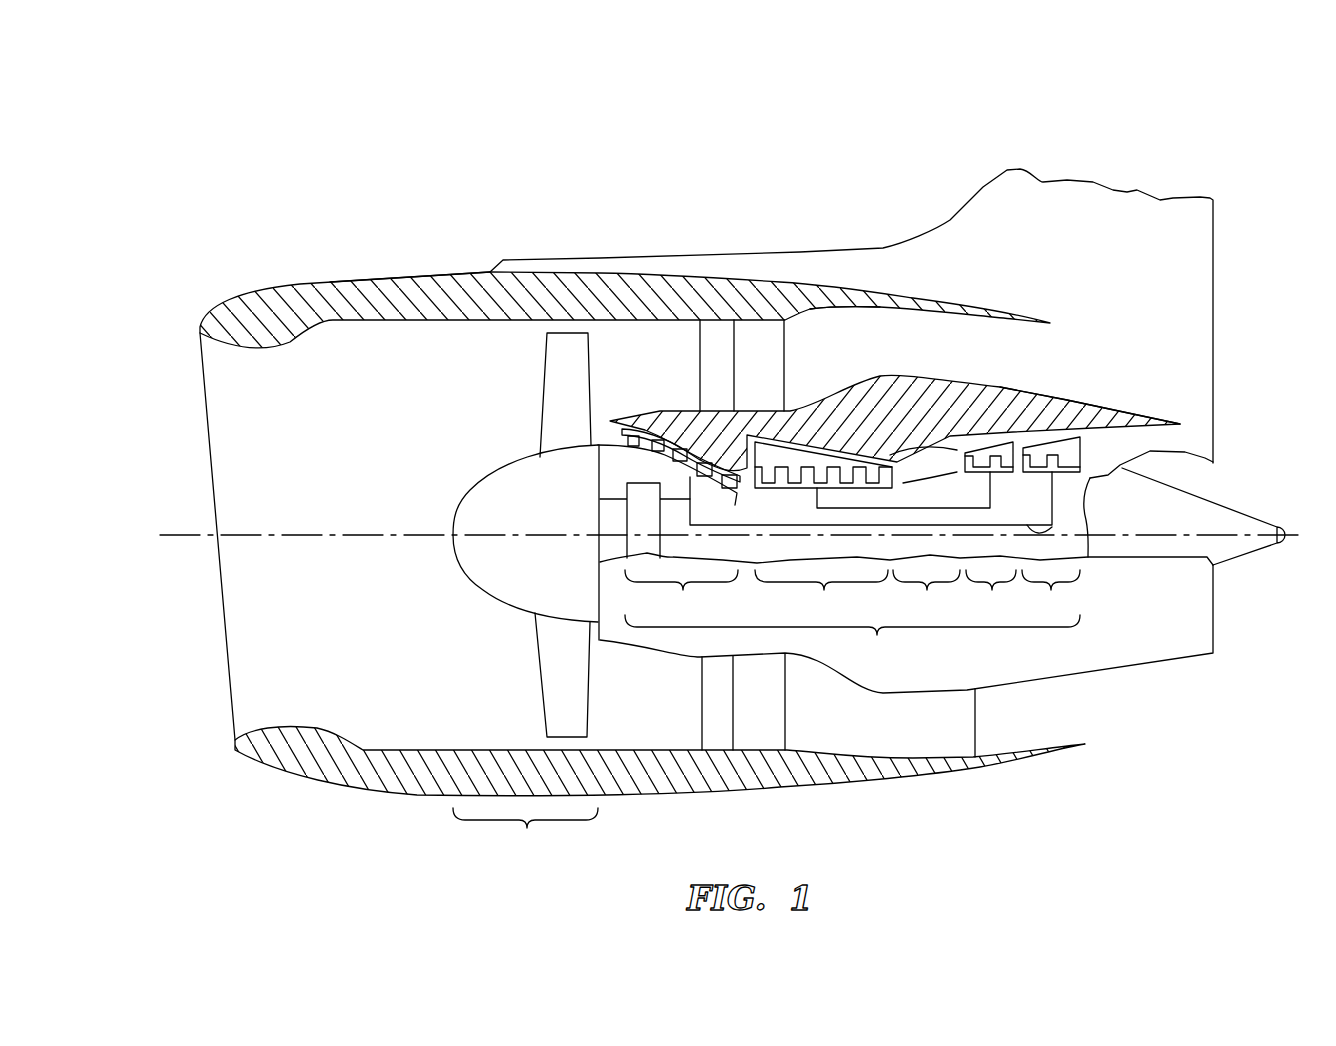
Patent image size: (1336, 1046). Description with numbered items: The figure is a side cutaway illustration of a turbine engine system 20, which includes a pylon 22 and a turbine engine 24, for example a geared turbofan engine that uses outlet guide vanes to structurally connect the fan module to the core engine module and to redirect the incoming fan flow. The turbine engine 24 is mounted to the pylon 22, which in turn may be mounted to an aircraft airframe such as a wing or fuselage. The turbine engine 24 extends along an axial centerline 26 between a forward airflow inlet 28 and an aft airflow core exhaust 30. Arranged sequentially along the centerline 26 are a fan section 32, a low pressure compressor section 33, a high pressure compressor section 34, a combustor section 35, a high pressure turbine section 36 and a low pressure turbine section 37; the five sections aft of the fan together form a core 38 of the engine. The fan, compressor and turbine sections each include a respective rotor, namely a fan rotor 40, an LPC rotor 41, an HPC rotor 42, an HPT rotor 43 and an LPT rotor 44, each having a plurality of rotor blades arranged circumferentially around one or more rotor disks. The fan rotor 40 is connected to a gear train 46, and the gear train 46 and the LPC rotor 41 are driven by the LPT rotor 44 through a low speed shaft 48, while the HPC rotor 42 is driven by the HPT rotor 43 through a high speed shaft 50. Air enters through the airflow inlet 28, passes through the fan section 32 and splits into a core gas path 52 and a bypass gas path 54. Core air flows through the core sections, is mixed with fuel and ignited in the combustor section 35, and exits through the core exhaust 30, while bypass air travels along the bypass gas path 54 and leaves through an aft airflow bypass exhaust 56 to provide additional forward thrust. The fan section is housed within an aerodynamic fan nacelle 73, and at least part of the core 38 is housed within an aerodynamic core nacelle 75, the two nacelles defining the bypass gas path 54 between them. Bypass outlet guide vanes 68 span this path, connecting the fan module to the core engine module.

The turbine engine system 20 is at (213, 212).
The pylon 22 is at (1170, 198).
The turbine engine 24 is at (337, 277).
The axial centerline 26 is at (172, 542).
The forward airflow inlet 28 is at (228, 680).
The aft airflow core exhaust 30 is at (1213, 450).
The fan section 32 is at (525, 837).
The low pressure compressor section 33 is at (681, 596).
The high pressure compressor section 34 is at (821, 596).
The combustor section 35 is at (926, 596).
The high pressure turbine section 36 is at (991, 596).
The low pressure turbine section 37 is at (1051, 596).
The core 38 is at (852, 643).
The fan rotor 40 is at (535, 613).
The LPC rotor 41 is at (643, 440).
The HPC rotor 42 is at (793, 457).
The HPT rotor 43 is at (984, 452).
The LPT rotor 44 is at (1065, 447).
The gear train 46 is at (627, 492).
The low speed shaft 48 is at (1032, 525).
The high speed shaft 50 is at (837, 516).
The core gas path 52 is at (958, 462).
The bypass gas path 54 is at (897, 357).
The aft airflow bypass exhaust 56 is at (1055, 333).
The vanes 68 is at (700, 342).
The fan nacelle 73 is at (398, 273).
The core nacelle 75 is at (1095, 407).